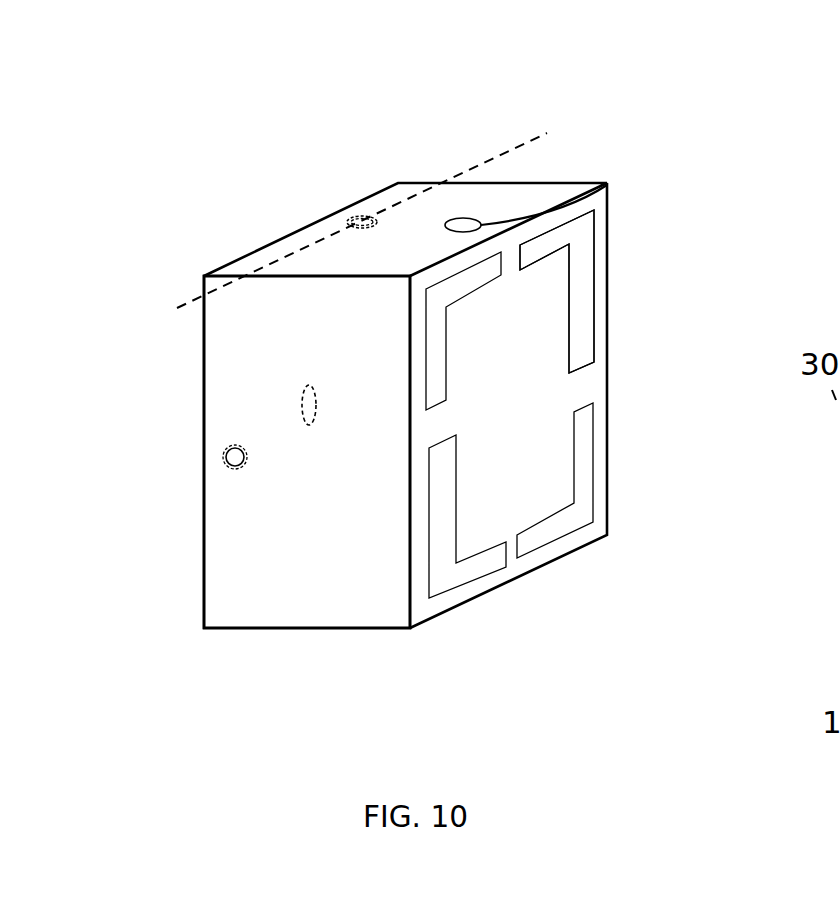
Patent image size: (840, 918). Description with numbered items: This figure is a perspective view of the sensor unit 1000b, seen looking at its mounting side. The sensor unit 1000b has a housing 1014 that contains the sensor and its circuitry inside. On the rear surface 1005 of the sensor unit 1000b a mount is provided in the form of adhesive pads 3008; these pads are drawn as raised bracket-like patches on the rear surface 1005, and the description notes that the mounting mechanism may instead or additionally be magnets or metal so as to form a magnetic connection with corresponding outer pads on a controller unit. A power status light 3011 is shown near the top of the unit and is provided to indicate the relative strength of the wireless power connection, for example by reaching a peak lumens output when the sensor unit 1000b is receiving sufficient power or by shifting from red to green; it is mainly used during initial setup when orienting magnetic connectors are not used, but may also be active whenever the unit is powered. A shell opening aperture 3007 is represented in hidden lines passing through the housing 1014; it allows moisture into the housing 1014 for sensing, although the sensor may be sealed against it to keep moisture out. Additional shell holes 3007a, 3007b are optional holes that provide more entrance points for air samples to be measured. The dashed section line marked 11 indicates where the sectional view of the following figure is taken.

The sensor unit 1000b is at (285, 650).
The housing 1014 is at (287, 565).
The rear surface 1005 is at (530, 395).
The adhesive pads 3008 is at (587, 242).
The power status light 3011 is at (607, 200).
The shell hole 3007b is at (343, 222).
The shell hole 3007a is at (225, 457).
The shell opening aperture 3007 is at (310, 428).
The section line for FIG. 11 is at (360, 217).